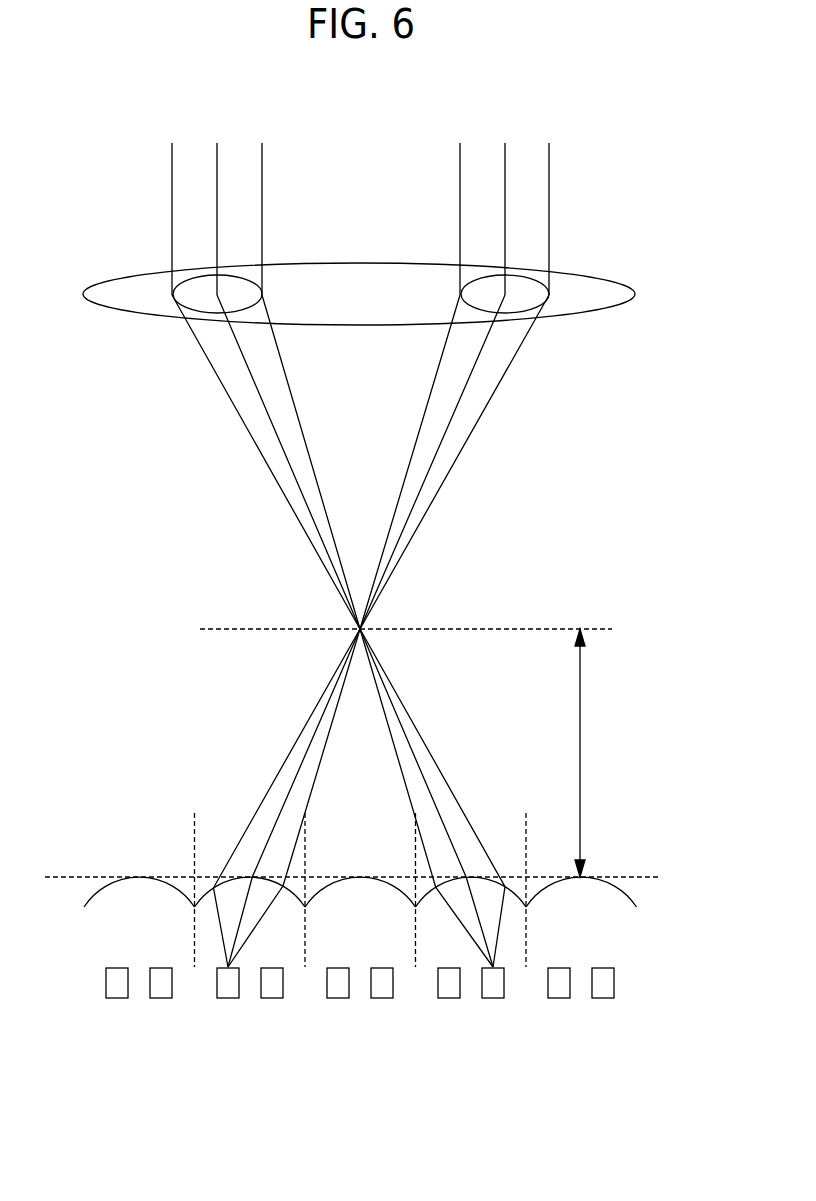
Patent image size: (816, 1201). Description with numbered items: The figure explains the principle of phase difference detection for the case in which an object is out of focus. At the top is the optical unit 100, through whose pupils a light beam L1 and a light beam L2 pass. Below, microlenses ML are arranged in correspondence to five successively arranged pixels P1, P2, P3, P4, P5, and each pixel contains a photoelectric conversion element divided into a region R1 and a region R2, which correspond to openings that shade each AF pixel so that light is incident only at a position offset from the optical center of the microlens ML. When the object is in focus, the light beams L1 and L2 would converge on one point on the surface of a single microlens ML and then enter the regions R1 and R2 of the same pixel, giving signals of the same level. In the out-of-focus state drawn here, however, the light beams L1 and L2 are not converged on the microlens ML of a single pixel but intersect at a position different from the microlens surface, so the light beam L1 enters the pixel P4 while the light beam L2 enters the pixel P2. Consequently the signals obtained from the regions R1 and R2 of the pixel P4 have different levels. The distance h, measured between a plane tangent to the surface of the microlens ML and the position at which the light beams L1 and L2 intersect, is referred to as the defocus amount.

The optical unit 100 is at (622, 287).
The light beam L1 is at (247, 277).
The light beam L2 is at (537, 278).
The microlens ML is at (636, 906).
The defocus amount h is at (581, 745).
The pixel P1 is at (139, 1047).
The pixel P2 is at (250, 1047).
The pixel P3 is at (360, 1047).
The pixel P4 is at (471, 1047).
The pixel P5 is at (581, 1047).
The region R1 is at (382, 999).
The region R2 is at (337, 999).